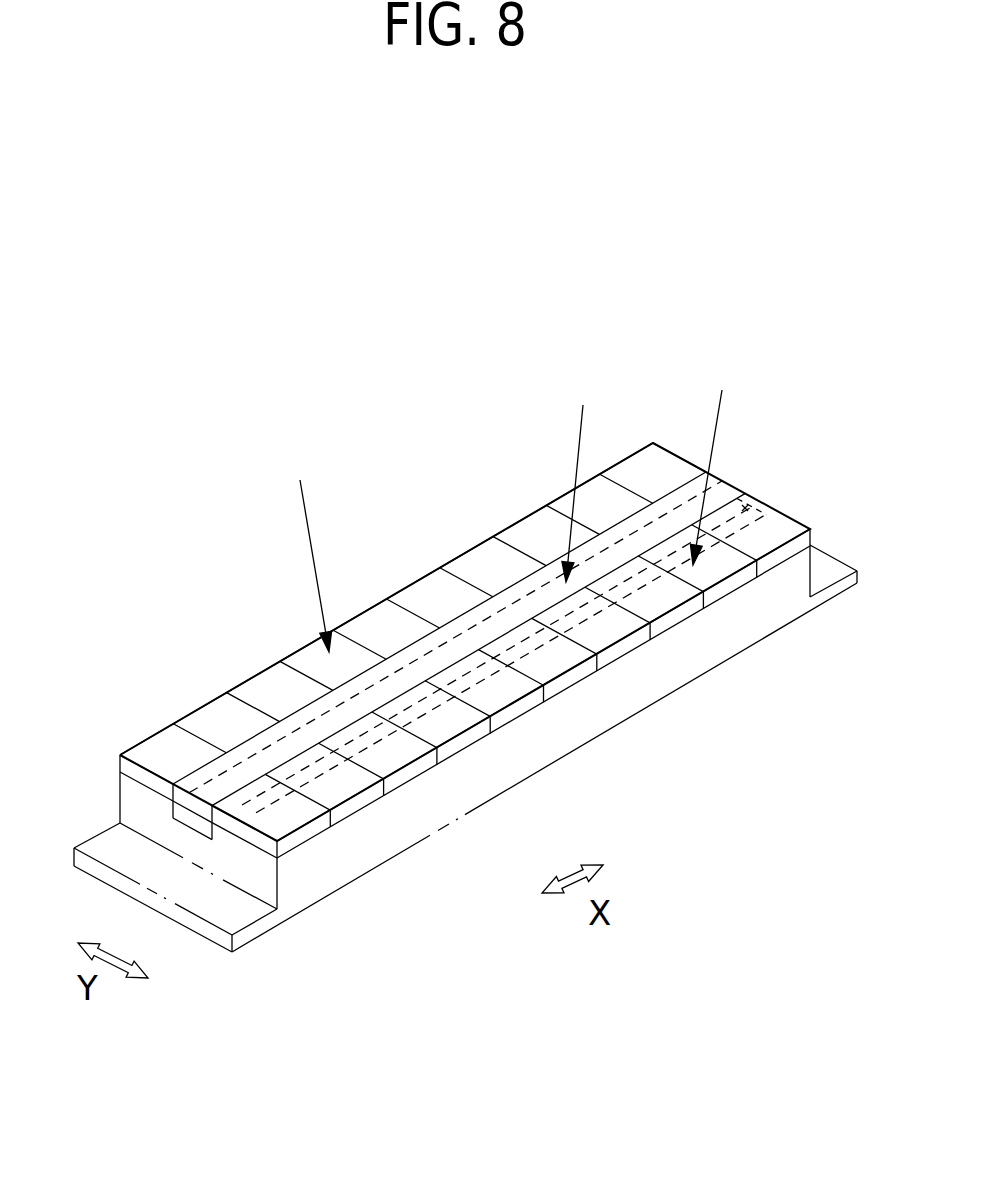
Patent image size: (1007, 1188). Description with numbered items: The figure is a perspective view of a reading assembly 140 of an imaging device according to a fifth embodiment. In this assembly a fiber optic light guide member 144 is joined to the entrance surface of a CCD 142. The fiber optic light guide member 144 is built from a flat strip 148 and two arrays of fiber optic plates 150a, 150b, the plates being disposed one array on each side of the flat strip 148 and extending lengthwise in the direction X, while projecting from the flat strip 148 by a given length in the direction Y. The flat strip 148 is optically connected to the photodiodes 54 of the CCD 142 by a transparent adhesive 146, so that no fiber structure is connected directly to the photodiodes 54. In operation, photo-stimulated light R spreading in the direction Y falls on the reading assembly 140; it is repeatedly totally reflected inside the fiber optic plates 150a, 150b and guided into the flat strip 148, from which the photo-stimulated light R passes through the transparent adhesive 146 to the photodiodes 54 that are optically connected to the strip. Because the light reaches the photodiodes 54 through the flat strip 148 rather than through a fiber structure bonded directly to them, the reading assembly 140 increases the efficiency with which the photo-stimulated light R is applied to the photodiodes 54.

The reading assembly 140 is at (623, 342).
The CCD 142 is at (363, 880).
The fiber optic light guide member 144 is at (507, 588).
The transparent adhesive 146 is at (201, 818).
The flat strip 148 is at (265, 757).
The fiber optic plates 150a is at (433, 590).
The fiber optic plates 150b is at (612, 622).
The photodiodes 54 is at (173, 813).
The photo-stimulated light R is at (311, 550).